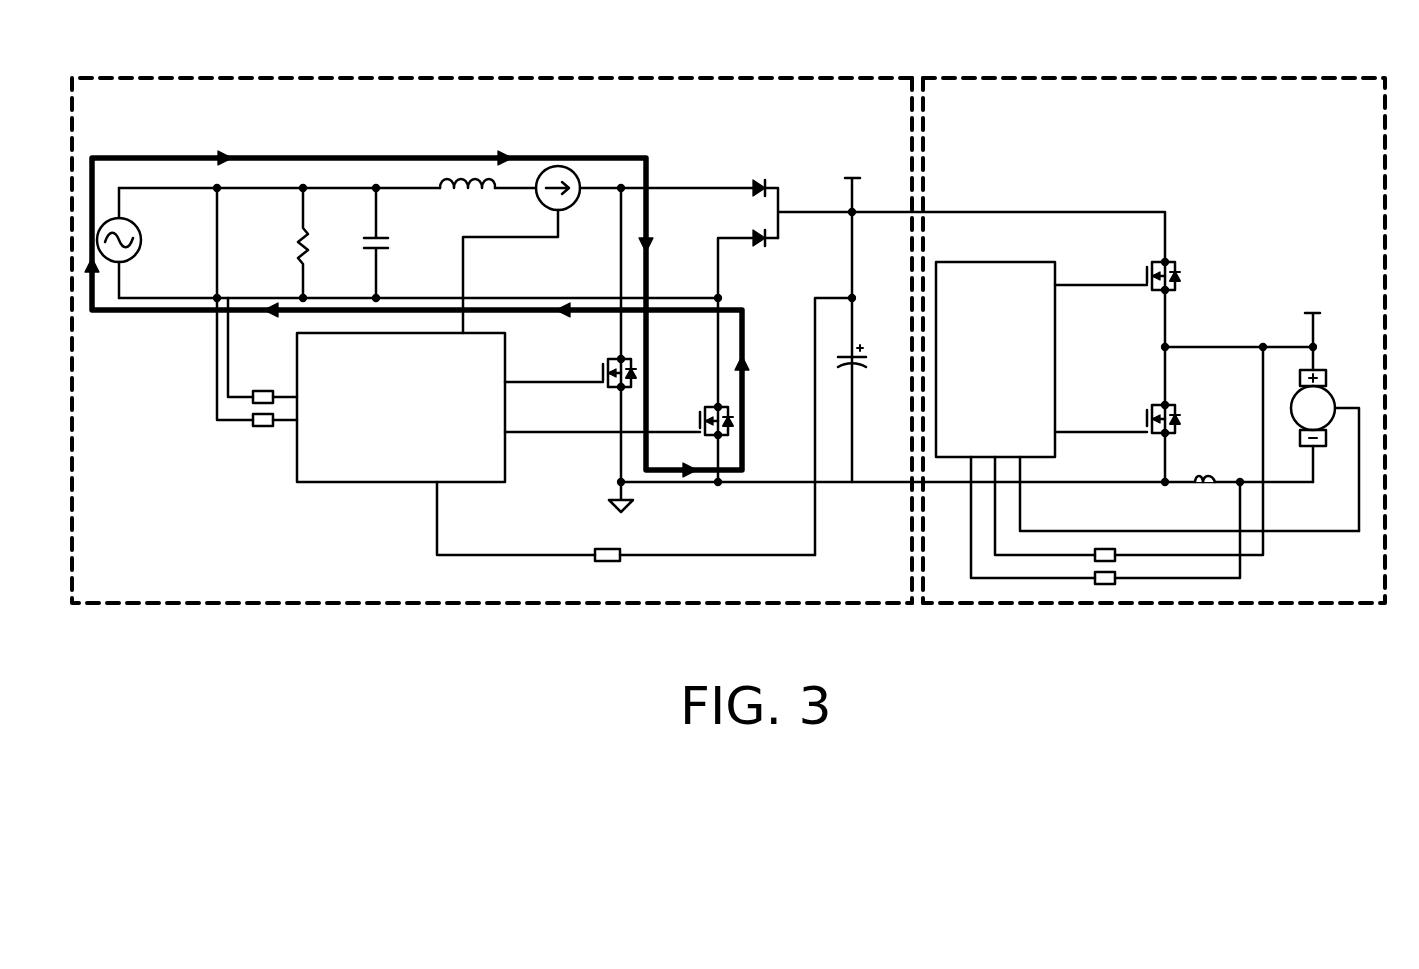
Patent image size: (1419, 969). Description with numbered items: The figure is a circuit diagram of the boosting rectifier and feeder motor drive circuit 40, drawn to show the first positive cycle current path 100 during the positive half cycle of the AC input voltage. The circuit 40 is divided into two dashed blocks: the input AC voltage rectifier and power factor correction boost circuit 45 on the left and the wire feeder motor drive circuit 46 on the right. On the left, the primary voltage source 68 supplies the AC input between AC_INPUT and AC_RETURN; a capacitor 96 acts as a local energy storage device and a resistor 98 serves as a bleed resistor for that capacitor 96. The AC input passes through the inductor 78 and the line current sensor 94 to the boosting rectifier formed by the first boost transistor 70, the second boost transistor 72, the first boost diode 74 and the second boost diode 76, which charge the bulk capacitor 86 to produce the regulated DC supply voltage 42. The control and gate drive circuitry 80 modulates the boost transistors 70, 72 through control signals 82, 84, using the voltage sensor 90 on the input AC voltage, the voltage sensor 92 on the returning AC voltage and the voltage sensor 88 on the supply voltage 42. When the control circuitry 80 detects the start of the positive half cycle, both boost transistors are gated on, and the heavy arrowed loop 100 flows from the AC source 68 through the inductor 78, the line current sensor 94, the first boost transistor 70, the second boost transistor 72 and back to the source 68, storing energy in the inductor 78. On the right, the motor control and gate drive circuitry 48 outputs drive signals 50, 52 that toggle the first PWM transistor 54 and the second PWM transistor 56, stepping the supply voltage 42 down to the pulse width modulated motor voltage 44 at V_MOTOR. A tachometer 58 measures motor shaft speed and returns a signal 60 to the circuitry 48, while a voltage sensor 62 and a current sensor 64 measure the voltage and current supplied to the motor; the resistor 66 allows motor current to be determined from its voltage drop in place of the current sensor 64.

The boosting rectifier and feeder motor drive circuit 40 is at (908, 38).
The regulated DC supply voltage 42 is at (833, 142).
The pulse width modulated motor voltage 44 is at (1317, 270).
The input AC voltage rectifier and power factor correction boost circuit 45 is at (489, 78).
The wire feeder motor drive circuit 46 is at (1149, 78).
The motor control and gate drive circuitry 48 is at (991, 261).
The drive signal 50 is at (1093, 252).
The drive signal 52 is at (1094, 396).
The first PWM transistor 54 is at (1181, 273).
The second PWM transistor 56 is at (1181, 419).
The tachometer 58 is at (1336, 392).
The tachometer signal 60 is at (1130, 512).
The voltage sensor 62 is at (1098, 548).
The current sensor 64 is at (1104, 588).
The resistor 66 is at (1210, 479).
The primary voltage source 68 is at (146, 246).
The first boost transistor 70 is at (640, 360).
The second boost transistor 72 is at (740, 424).
The first boost diode 74 is at (757, 183).
The second boost diode 76 is at (768, 250).
The inductor 78 is at (455, 184).
The control and gate drive circuitry 80 is at (419, 485).
The control signal 82 is at (548, 348).
The control signal 84 is at (566, 408).
The bulk capacitor 86 is at (871, 364).
The voltage sensor 88 is at (615, 562).
The voltage sensor 90 is at (262, 389).
The voltage sensor 92 is at (266, 429).
The line current sensor 94 is at (574, 171).
The capacitor 96 is at (386, 244).
The resistor 98 is at (299, 246).
The first positive cycle current path 100 is at (366, 157).